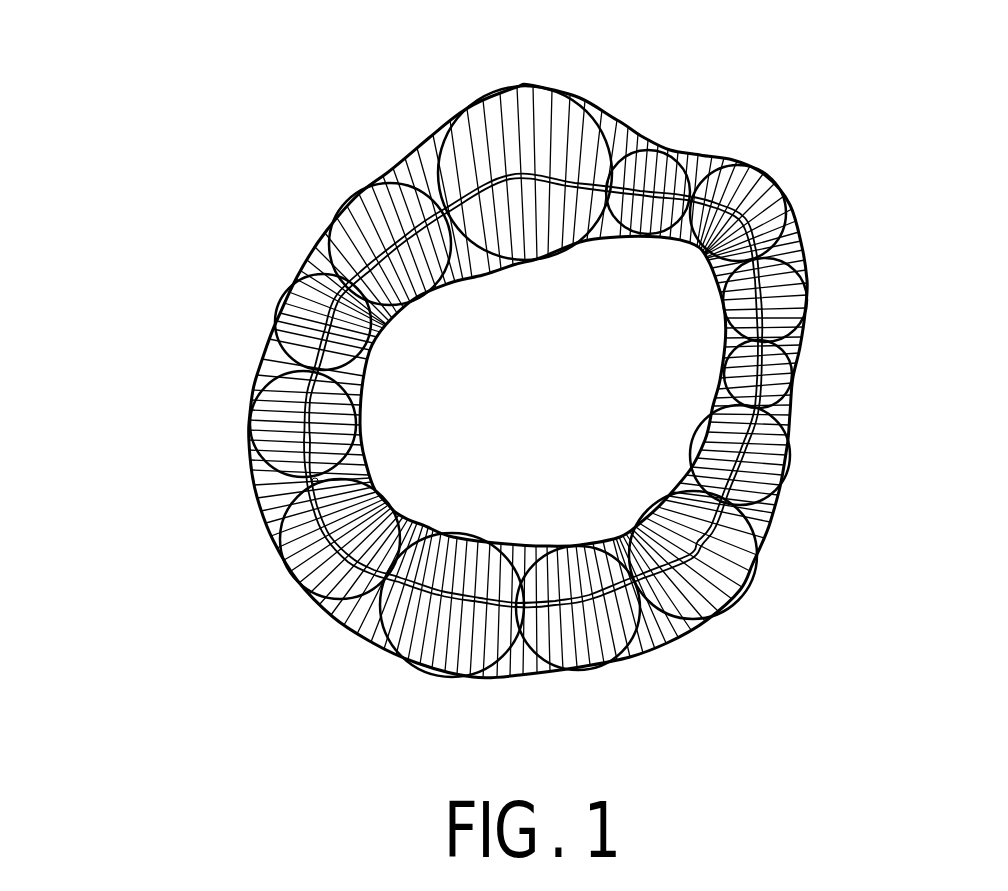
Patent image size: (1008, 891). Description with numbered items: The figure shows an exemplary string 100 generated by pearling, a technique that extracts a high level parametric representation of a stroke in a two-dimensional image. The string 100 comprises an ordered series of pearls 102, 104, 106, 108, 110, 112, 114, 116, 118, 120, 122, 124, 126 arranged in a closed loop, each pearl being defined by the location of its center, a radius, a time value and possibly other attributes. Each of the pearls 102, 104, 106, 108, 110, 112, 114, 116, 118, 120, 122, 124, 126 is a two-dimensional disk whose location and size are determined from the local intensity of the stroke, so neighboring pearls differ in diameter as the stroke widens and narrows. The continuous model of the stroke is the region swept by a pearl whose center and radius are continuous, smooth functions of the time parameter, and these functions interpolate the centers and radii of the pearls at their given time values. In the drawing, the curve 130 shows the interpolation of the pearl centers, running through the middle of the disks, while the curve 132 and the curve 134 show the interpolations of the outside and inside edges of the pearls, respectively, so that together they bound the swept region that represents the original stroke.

The string 100 is at (148, 150).
The pearl 102 is at (486, 112).
The pearl 104 is at (665, 161).
The pearl 106 is at (756, 184).
The pearl 108 is at (776, 270).
The pearl 110 is at (777, 344).
The pearl 112 is at (779, 410).
The pearl 114 is at (737, 528).
The pearl 116 is at (598, 613).
The pearl 118 is at (414, 611).
The pearl 120 is at (294, 530).
The pearl 122 is at (256, 386).
The pearl 124 is at (304, 296).
The pearl 126 is at (366, 209).
The curve 130 is at (299, 473).
The curve 132 is at (236, 427).
The curve 134 is at (370, 378).